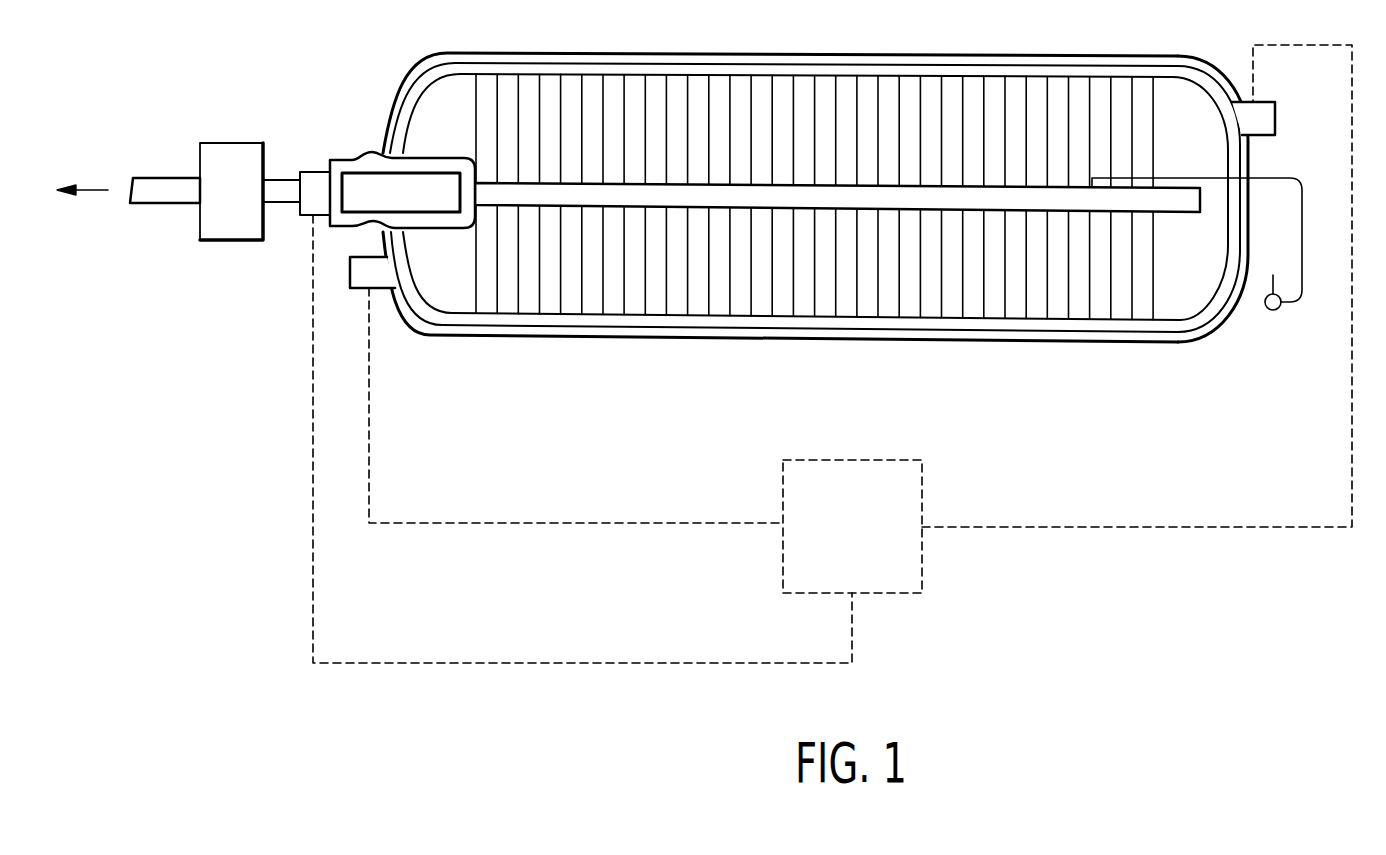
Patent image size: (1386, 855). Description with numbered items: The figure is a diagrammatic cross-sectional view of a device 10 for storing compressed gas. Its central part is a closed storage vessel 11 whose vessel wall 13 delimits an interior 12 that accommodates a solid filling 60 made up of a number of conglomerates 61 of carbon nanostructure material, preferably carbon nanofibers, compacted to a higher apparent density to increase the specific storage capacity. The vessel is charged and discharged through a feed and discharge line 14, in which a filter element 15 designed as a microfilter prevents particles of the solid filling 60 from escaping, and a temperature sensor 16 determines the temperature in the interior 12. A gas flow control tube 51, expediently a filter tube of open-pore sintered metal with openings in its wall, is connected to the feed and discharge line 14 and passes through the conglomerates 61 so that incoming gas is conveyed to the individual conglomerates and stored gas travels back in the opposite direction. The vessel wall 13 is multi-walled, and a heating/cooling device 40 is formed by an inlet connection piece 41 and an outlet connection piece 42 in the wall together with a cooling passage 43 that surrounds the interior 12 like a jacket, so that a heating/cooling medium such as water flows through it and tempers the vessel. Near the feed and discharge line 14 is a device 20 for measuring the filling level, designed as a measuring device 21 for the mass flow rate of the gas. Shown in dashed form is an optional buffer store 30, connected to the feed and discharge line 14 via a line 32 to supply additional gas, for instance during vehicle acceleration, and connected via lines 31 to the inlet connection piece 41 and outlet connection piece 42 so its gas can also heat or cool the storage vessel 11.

The device for storing compressed gas 10 is at (205, 298).
The storage vessel 11 is at (798, 191).
The interior 12 is at (1178, 95).
The vessel wall 13 is at (892, 55).
The feed and discharge line 14 is at (362, 150).
The filter element 15 is at (350, 203).
The temperature sensor 16 is at (1273, 177).
The device for measuring the filling level 20 is at (160, 170).
The measuring device for measuring the mass flow rate 21 is at (205, 235).
The buffer store 30 is at (887, 597).
The lines 31 is at (602, 523).
The line 32 is at (593, 665).
The heating/cooling device 40 is at (384, 319).
The inlet connection piece 41 is at (352, 284).
The outlet connection piece 42 is at (1268, 102).
The cooling passage 43 is at (977, 62).
The gas flow control tube 51 is at (1165, 207).
The solid filling 60 is at (814, 193).
The conglomerates 61 is at (765, 82).